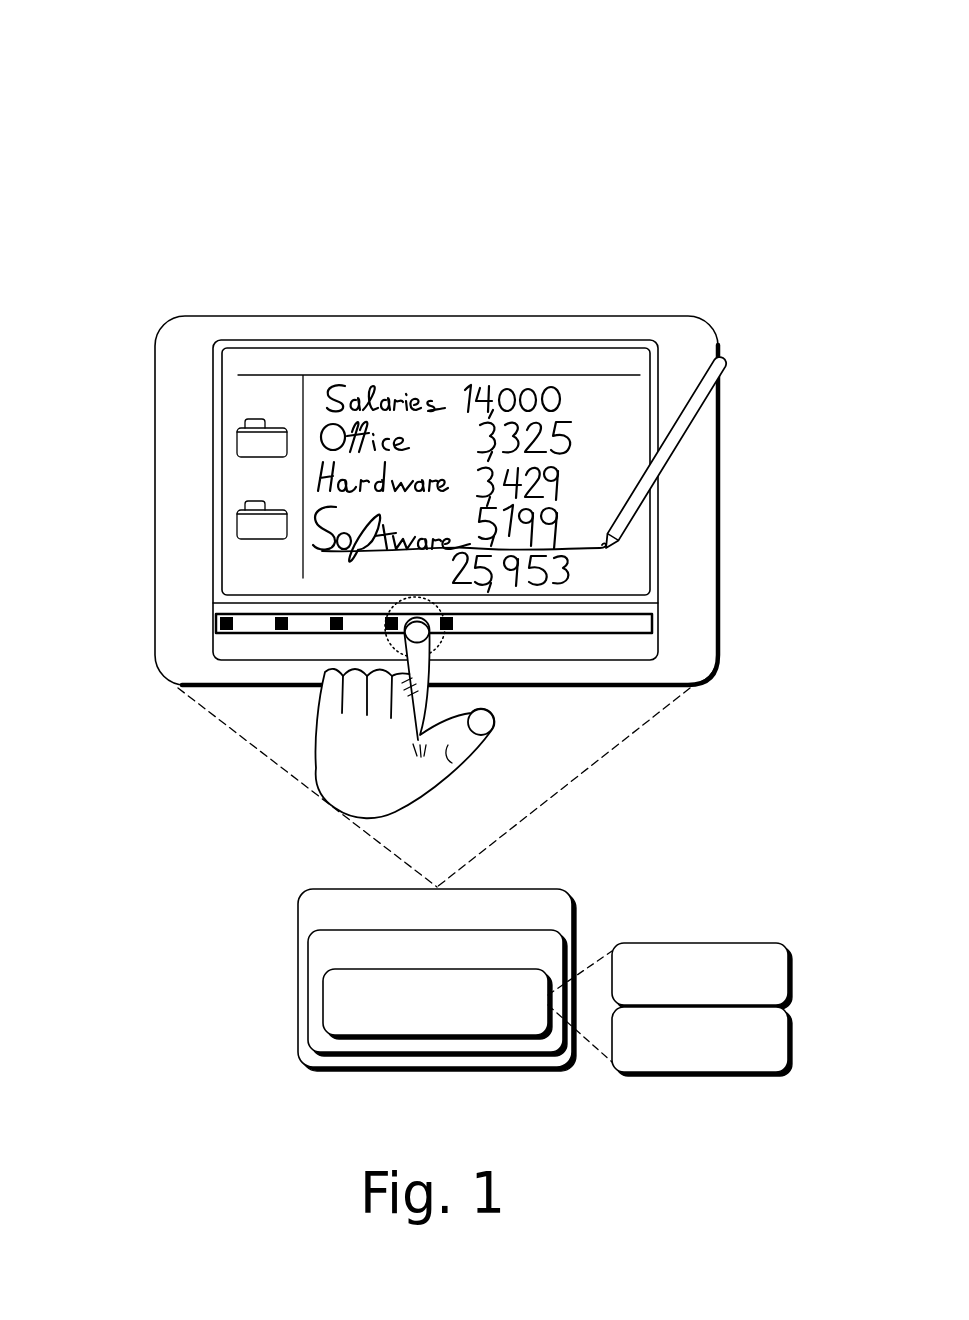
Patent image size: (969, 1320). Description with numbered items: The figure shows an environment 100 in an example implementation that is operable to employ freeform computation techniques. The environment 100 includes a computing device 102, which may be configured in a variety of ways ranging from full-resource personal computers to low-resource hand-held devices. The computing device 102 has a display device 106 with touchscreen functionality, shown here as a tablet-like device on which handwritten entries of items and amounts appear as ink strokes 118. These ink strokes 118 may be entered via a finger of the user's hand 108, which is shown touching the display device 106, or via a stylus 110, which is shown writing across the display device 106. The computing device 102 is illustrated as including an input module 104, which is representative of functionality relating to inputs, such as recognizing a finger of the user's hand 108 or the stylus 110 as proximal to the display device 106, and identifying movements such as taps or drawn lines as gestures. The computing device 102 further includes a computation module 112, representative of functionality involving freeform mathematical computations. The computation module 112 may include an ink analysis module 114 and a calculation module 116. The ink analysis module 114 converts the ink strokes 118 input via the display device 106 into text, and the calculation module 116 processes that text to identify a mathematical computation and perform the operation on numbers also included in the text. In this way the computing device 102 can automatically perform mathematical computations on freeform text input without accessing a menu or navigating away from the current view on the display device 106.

The environment 100 is at (132, 58).
The computing device 102 is at (542, 919).
The input module 104 is at (517, 960).
The display device 106 is at (635, 375).
The user's hand 108 is at (383, 773).
The stylus 110 is at (718, 362).
The computation module 112 is at (490, 1025).
The ink analysis module 114 is at (755, 998).
The calculation module 116 is at (755, 1061).
The ink strokes 118 is at (372, 300).